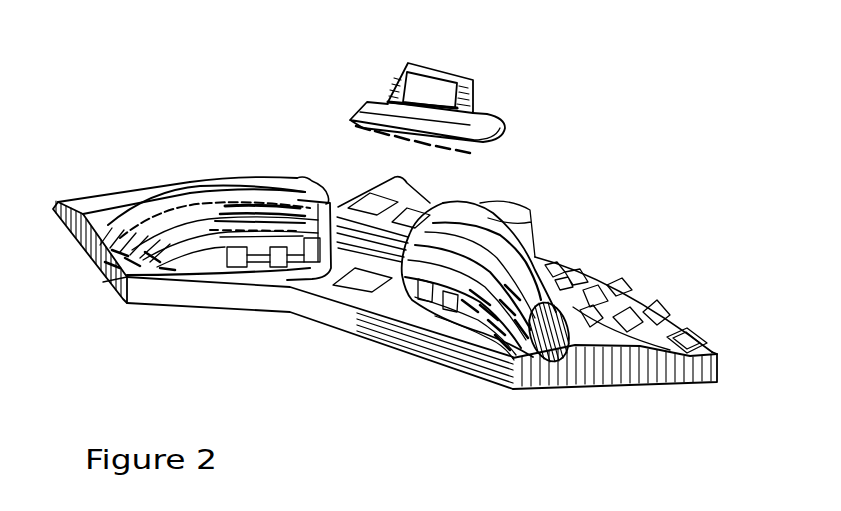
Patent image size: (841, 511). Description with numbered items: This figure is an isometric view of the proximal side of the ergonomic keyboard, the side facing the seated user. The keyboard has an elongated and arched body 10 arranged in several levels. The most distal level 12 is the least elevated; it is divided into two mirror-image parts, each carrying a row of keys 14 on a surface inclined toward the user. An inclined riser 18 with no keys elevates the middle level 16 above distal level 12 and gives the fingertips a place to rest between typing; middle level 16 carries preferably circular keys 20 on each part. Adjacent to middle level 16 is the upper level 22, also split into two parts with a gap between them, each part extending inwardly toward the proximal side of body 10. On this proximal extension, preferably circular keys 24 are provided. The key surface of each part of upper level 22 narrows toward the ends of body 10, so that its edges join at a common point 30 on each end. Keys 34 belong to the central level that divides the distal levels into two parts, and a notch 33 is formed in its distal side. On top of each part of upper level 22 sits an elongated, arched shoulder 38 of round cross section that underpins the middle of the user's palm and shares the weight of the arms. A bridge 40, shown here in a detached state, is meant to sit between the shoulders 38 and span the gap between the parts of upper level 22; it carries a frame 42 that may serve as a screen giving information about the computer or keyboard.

The body 10 is at (655, 86).
The distal level 12 is at (718, 346).
The keys 14 is at (683, 333).
The middle level 16 is at (667, 308).
The riser 18 is at (660, 337).
The keys 20 is at (630, 308).
The upper level 22 is at (217, 262).
The keys 24 is at (275, 258).
The common point 30 is at (103, 282).
The notch 33 is at (412, 198).
The keys 34 is at (372, 203).
The shoulder 38 is at (241, 187).
The bridge 40 is at (480, 120).
The frame 42 is at (463, 73).